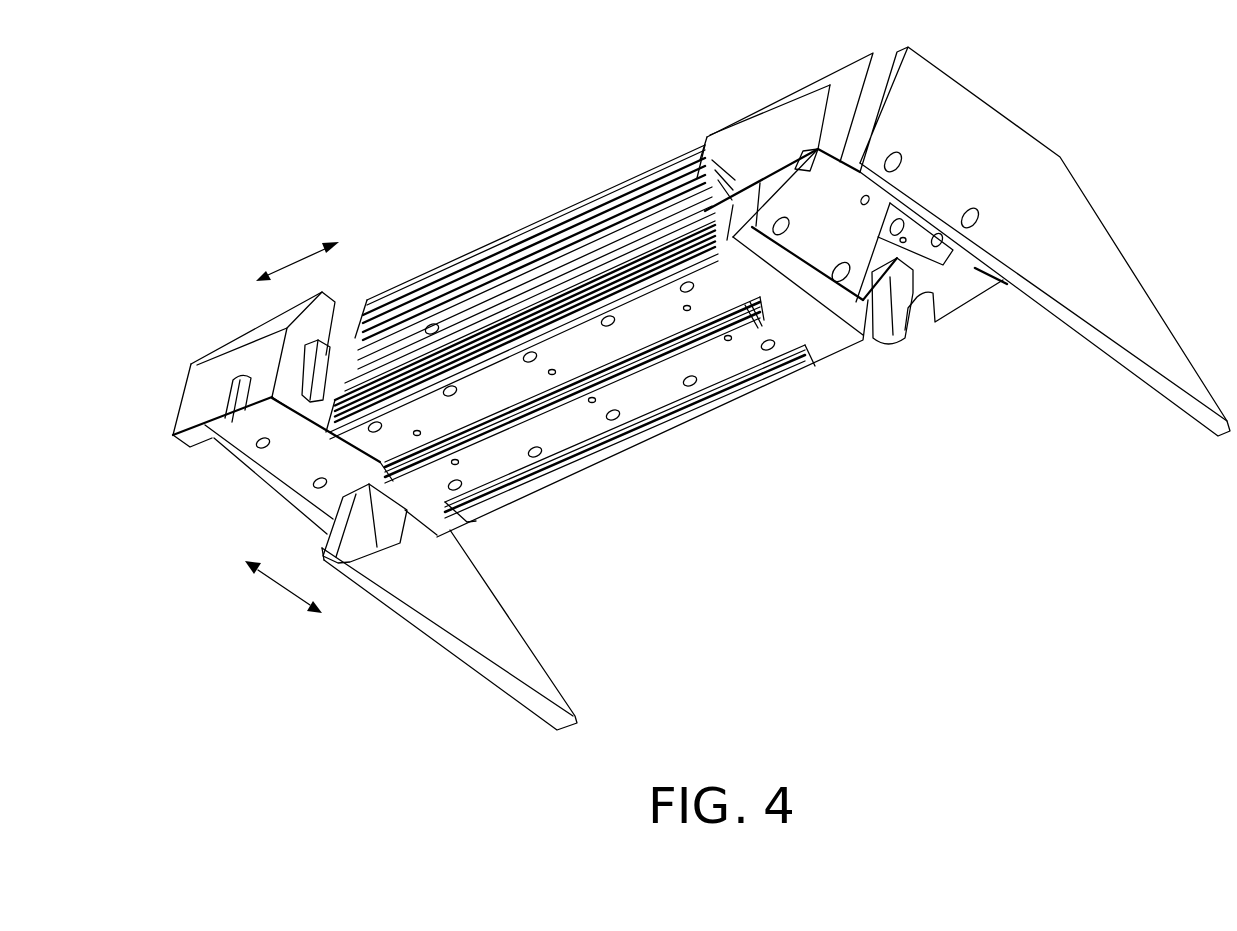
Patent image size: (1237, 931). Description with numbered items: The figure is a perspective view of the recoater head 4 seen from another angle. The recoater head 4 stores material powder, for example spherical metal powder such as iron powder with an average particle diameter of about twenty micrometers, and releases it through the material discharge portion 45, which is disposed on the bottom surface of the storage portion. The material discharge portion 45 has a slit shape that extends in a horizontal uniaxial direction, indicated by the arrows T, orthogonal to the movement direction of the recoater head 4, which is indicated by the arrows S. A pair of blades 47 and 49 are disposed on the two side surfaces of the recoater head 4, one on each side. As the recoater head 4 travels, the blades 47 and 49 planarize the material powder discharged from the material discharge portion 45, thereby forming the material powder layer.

The recoater head 4 is at (307, 145).
The material discharge portion 45 is at (553, 403).
The blade 47 is at (773, 377).
The blade 49 is at (650, 250).